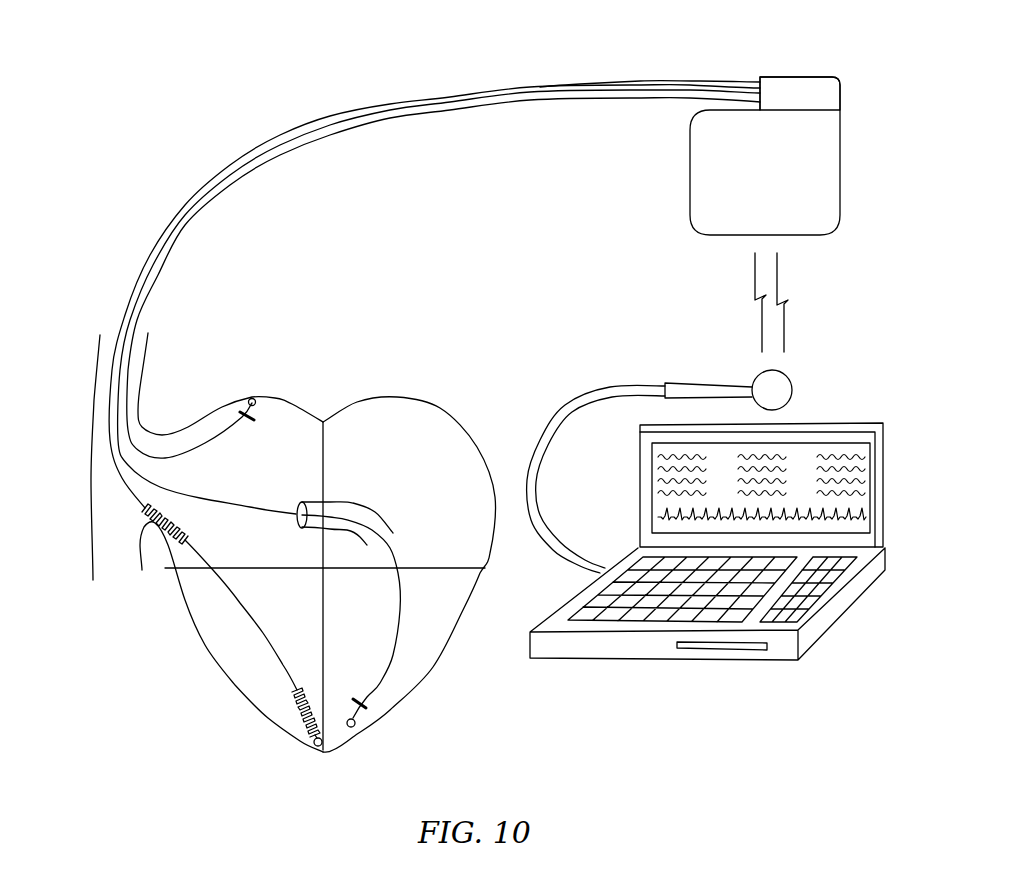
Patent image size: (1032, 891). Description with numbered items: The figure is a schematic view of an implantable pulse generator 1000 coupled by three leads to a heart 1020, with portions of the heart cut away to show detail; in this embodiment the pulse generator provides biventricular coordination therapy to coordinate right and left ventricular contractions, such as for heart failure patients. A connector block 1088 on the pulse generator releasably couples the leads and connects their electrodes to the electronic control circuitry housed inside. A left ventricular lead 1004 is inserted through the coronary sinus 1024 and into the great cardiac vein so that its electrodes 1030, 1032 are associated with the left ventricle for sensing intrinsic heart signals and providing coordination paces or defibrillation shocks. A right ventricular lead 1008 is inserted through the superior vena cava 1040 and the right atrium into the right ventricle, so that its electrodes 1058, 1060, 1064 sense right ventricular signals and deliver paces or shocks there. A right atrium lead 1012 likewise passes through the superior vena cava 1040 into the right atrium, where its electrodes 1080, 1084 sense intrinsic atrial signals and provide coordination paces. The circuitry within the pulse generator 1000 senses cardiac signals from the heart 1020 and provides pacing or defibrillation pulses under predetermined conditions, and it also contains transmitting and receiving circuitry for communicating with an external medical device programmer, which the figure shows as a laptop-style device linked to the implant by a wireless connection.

The implantable pulse generator 1000 is at (823, 43).
The connector block 1088 is at (840, 91).
The right ventricular lead 1008 is at (367, 104).
The left ventricular lead 1004 is at (350, 120).
The right atrium lead 1012 is at (303, 145).
The heart 1020 is at (458, 371).
The electrode 1080 is at (252, 398).
The electrode 1084 is at (250, 422).
The superior vena cava 1040 is at (110, 501).
The electrode 1064 is at (173, 531).
The coronary sinus 1024 is at (355, 503).
The electrode 1060 is at (303, 708).
The electrode 1058 is at (315, 746).
The electrode 1032 is at (366, 705).
The electrode 1030 is at (356, 727).